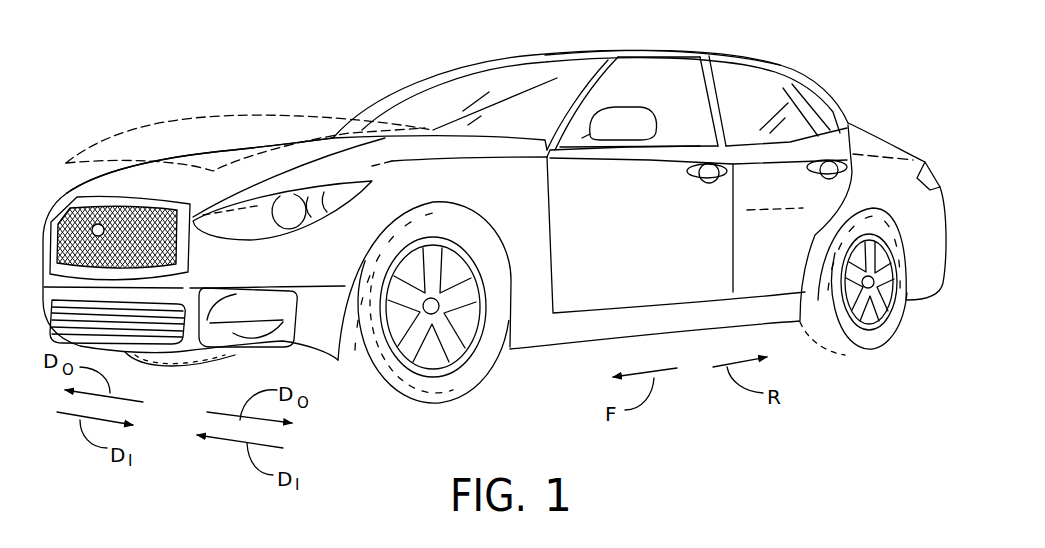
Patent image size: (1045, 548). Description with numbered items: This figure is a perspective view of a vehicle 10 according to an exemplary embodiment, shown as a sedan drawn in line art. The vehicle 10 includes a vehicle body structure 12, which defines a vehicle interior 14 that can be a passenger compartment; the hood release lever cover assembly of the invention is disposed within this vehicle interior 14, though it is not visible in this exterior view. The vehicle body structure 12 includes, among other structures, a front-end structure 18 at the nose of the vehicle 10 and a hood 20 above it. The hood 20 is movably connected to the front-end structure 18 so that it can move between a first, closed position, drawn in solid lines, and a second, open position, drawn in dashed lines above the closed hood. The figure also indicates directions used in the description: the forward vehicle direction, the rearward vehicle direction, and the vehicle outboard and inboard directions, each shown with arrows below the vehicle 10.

The vehicle 10 is at (808, 38).
The vehicle body structure 12 is at (580, 44).
The vehicle interior 14 is at (660, 88).
The front-end structure 18 is at (46, 222).
The hood 20 is at (270, 160).